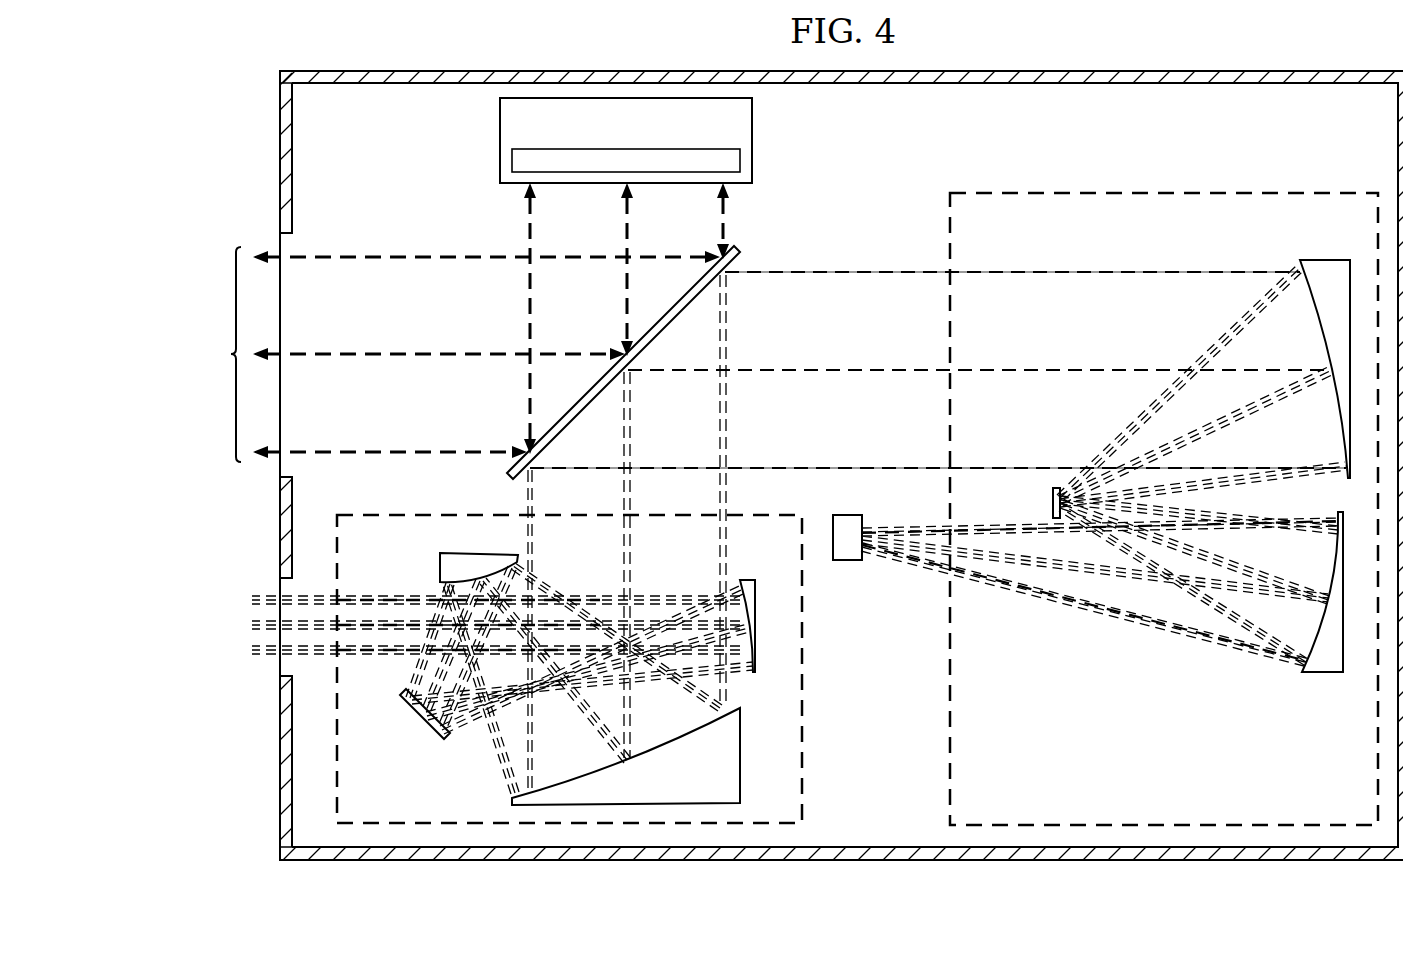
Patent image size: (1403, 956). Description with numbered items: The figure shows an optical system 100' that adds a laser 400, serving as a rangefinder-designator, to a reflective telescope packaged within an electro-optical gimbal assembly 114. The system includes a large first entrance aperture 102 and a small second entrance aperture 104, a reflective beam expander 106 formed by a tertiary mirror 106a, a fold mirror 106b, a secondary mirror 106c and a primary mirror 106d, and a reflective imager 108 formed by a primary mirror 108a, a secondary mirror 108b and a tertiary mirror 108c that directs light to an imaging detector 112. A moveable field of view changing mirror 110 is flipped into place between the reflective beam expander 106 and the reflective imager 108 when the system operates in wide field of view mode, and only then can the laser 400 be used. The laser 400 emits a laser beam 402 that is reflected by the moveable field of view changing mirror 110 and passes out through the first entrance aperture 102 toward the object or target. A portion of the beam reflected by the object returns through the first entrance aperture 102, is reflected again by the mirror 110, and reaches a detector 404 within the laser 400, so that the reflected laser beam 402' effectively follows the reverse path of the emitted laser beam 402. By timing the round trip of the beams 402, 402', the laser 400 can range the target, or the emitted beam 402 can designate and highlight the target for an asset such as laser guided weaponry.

The optical system 100' is at (841, 430).
The first entrance aperture 102 is at (292, 230).
The second entrance aperture 104 is at (285, 676).
The reflective beam expander 106 is at (803, 712).
The tertiary mirror 106a is at (770, 552).
The fold mirror 106b is at (425, 722).
The secondary mirror 106c is at (438, 561).
The primary mirror 106d is at (720, 788).
The reflective imager 108 is at (951, 654).
The primary mirror 108a is at (1320, 260).
The secondary mirror 108b is at (1052, 503).
The tertiary mirror 108c is at (1322, 672).
The moveable field of view changing mirror 110 is at (736, 252).
The imaging detector 112 is at (848, 560).
The electro-optical gimbal assembly 114 is at (512, 70).
The laser 400 is at (500, 120).
The laser beam 402 is at (428, 322).
The reflected laser beam 402' is at (428, 322).
The detector 404 is at (600, 148).